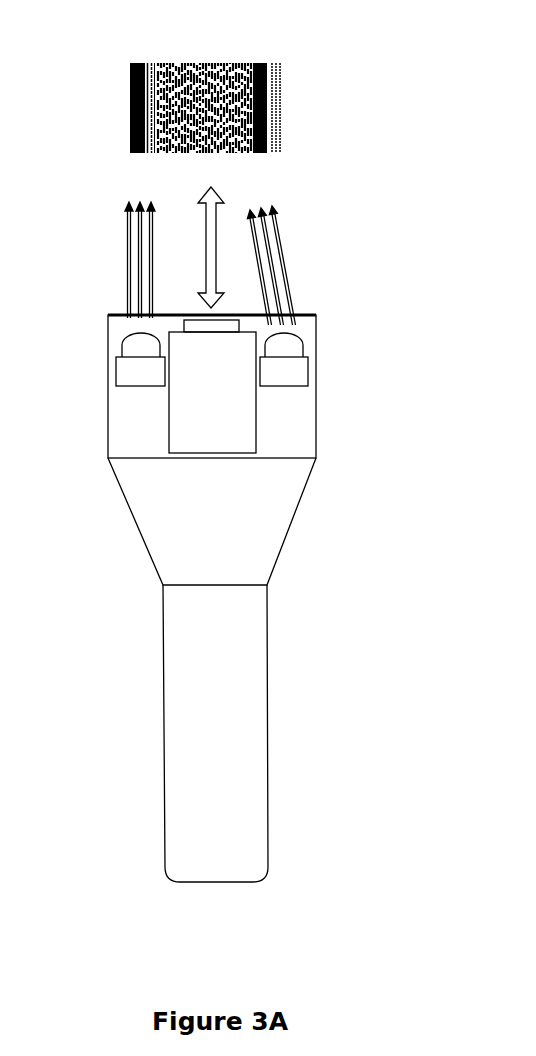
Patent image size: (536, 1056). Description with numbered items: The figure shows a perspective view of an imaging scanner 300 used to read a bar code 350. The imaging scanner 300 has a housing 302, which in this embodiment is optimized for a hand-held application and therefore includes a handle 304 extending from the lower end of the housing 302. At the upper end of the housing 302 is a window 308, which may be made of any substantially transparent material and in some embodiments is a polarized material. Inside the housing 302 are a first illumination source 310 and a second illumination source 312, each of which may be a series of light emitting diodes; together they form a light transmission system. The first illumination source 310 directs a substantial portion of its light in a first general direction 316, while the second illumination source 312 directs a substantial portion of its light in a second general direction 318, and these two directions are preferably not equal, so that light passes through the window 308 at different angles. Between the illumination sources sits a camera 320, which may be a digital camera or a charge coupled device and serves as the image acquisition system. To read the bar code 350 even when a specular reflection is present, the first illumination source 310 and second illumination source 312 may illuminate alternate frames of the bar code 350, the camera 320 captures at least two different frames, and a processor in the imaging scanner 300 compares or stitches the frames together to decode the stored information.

The imaging scanner 300 is at (409, 202).
The housing 302 is at (130, 507).
The handle 304 is at (164, 818).
The window 308 is at (120, 313).
The first illumination source 310 is at (116, 365).
The second illumination source 312 is at (308, 370).
The first general direction 316 is at (127, 207).
The second general direction 318 is at (284, 259).
The camera 320 is at (256, 436).
The bar code 350 is at (282, 73).